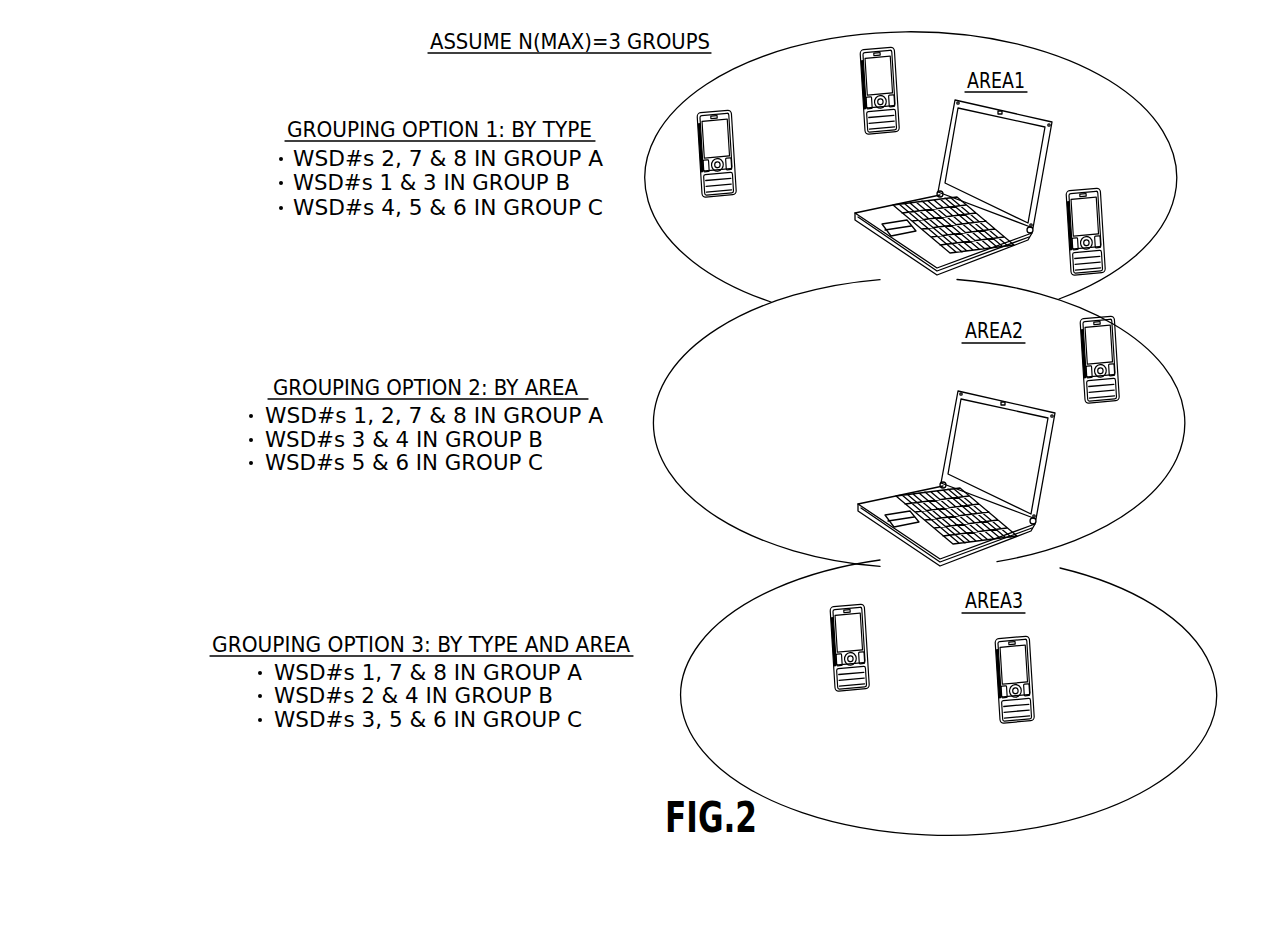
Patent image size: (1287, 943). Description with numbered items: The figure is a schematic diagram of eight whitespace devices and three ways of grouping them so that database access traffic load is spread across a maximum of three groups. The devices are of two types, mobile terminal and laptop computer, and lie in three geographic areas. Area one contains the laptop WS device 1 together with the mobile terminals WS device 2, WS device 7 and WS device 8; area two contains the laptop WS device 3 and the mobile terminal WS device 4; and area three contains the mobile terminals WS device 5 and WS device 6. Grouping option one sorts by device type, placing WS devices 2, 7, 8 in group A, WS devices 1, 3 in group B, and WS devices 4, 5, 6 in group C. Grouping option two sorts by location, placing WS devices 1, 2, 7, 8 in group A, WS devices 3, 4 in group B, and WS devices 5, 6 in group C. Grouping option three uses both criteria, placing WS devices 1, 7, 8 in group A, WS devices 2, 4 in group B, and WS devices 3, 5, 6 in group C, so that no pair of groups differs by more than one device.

The whitespace device WSD # 1 is at (1040, 121).
The whitespace device WSD # 2 is at (1093, 193).
The whitespace device WSD # 3 is at (880, 497).
The whitespace device WSD # 4 is at (1113, 316).
The whitespace device WSD # 5 is at (827, 685).
The whitespace device WSD # 6 is at (1025, 643).
The whitespace device WSD # 7 is at (712, 197).
The whitespace device WSD # 8 is at (885, 62).